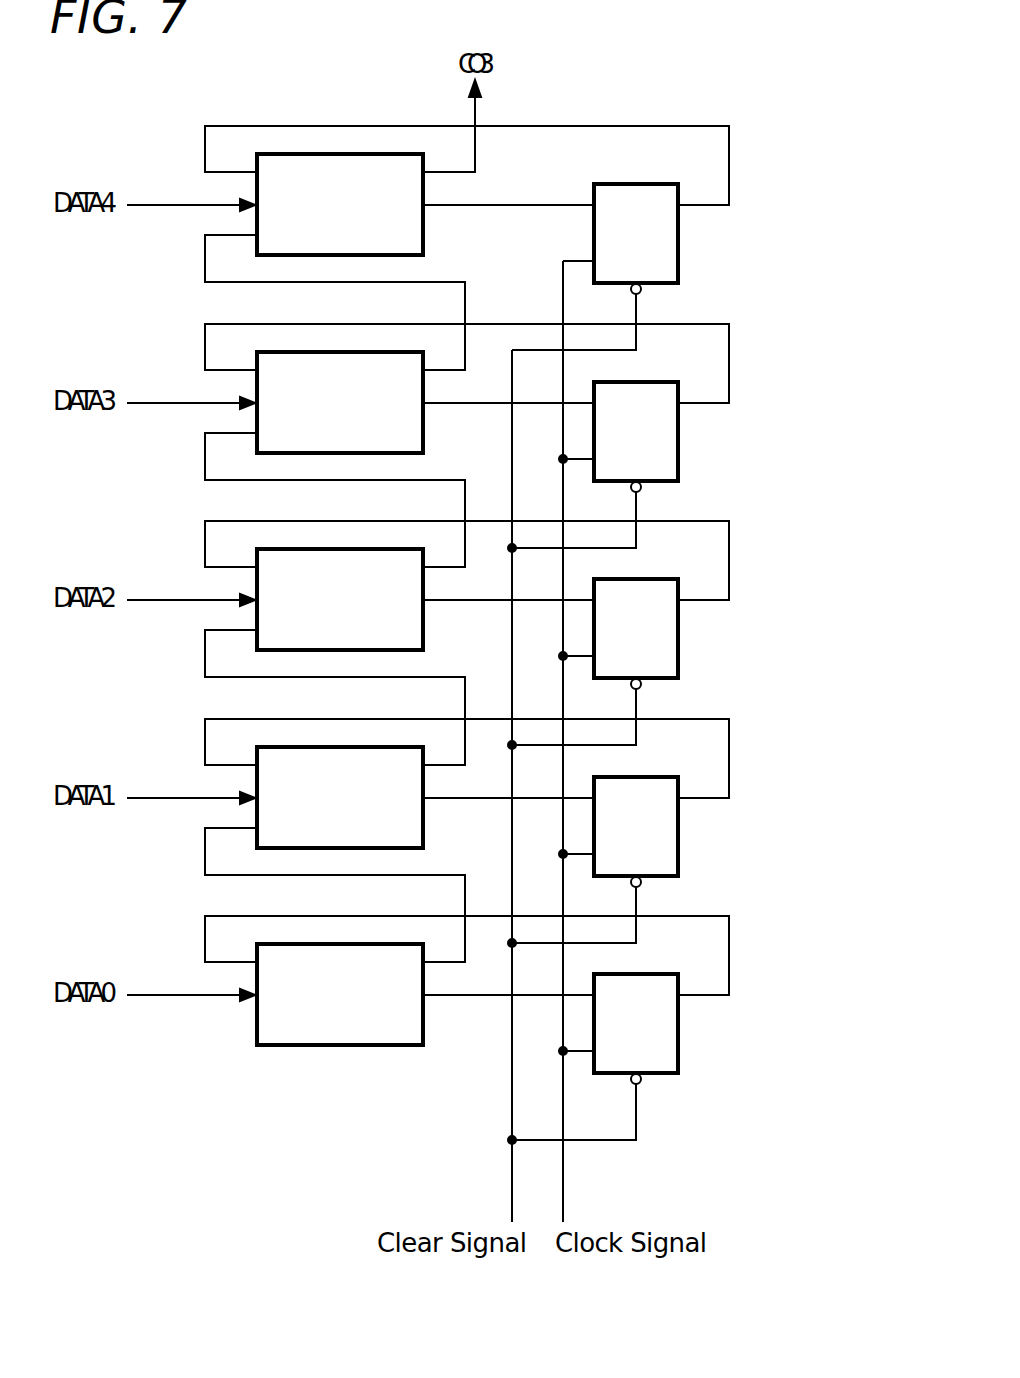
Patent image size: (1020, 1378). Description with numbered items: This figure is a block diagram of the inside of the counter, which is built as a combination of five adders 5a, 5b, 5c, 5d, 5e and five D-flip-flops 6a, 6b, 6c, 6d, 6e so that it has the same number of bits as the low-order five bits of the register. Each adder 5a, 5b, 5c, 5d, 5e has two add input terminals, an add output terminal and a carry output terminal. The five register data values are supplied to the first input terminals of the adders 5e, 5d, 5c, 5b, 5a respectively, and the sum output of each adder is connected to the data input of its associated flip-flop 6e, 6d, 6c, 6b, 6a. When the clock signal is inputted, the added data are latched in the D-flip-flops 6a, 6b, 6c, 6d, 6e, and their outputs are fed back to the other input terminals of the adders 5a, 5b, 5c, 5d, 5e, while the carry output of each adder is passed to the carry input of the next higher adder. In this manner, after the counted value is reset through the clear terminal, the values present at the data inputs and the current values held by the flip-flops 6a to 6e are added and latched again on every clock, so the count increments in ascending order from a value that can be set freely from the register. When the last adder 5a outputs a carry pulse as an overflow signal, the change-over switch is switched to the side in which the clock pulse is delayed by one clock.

The adder 5a is at (425, 237).
The adder 5b is at (425, 435).
The adder 5c is at (425, 632).
The adder 5d is at (425, 830).
The adder 5e is at (425, 1027).
The D-flip-flop 6a is at (680, 245).
The D-flip-flop 6b is at (680, 443).
The D-flip-flop 6c is at (680, 640).
The D-flip-flop 6d is at (680, 838).
The D-flip-flop 6e is at (680, 1035).